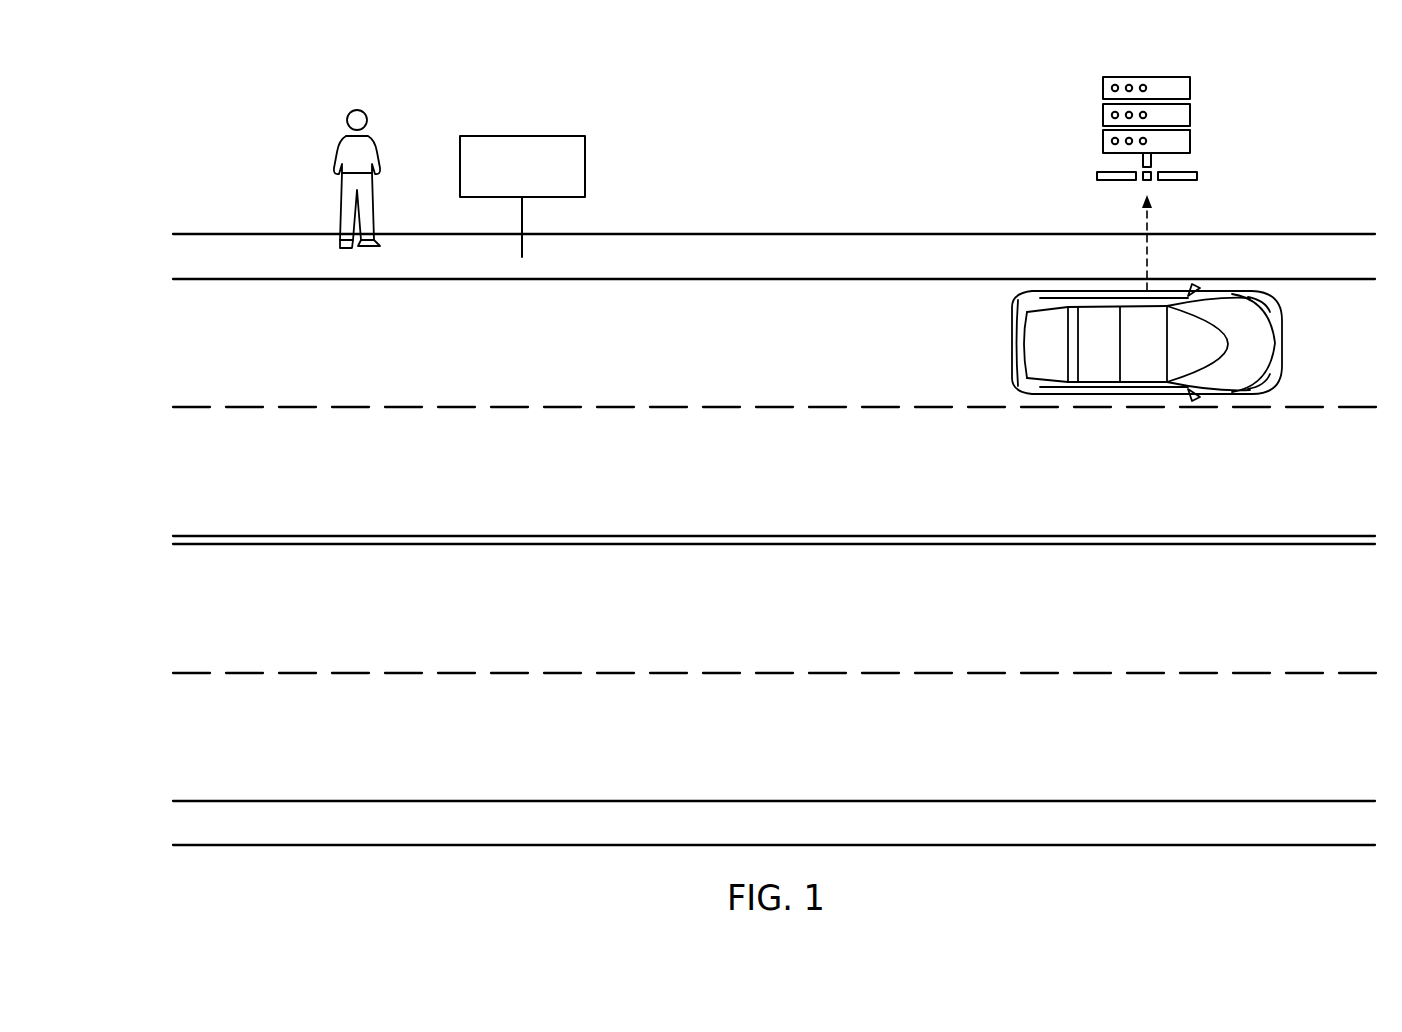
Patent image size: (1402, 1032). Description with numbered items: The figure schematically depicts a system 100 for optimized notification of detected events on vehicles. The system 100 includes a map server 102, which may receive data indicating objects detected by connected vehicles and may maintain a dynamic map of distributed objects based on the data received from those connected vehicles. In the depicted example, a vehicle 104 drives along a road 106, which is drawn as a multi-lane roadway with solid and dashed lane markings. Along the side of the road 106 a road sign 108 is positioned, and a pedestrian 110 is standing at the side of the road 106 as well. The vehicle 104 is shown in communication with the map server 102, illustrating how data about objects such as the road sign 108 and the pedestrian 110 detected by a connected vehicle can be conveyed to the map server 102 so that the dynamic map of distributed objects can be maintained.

The system 100 is at (129, 75).
The map server 102 is at (1190, 143).
The vehicle 104 is at (1226, 291).
The road 106 is at (765, 496).
The road sign 108 is at (585, 170).
The pedestrian 110 is at (345, 188).